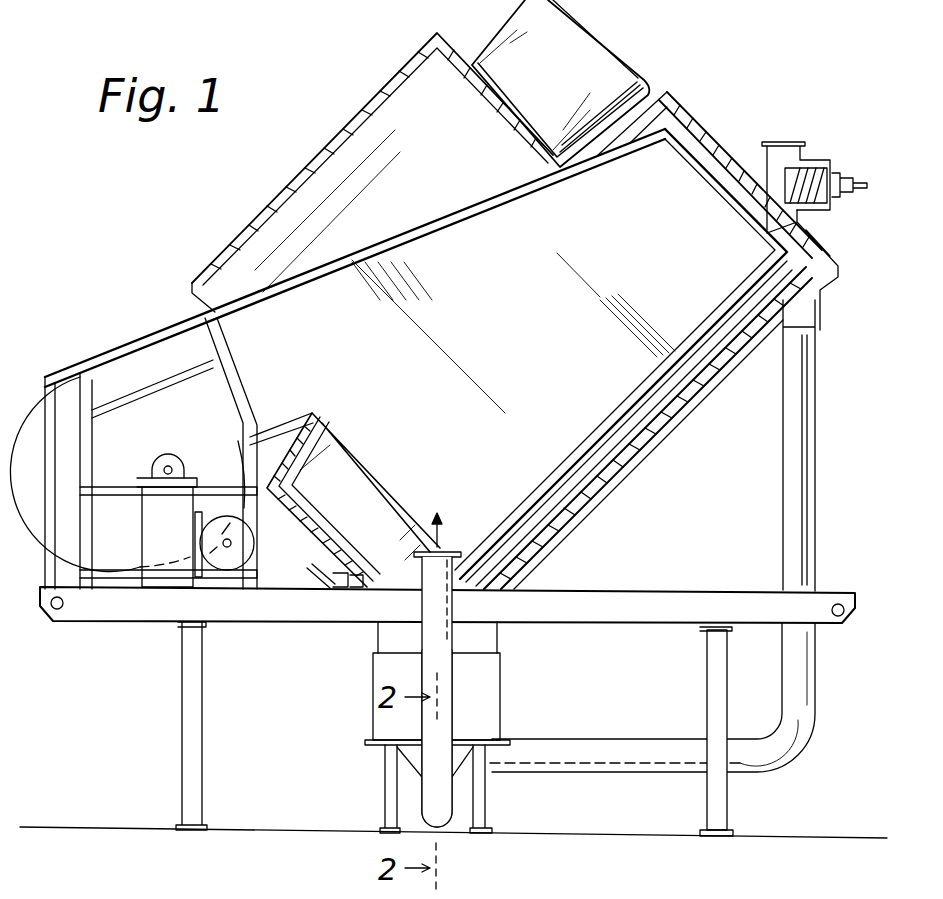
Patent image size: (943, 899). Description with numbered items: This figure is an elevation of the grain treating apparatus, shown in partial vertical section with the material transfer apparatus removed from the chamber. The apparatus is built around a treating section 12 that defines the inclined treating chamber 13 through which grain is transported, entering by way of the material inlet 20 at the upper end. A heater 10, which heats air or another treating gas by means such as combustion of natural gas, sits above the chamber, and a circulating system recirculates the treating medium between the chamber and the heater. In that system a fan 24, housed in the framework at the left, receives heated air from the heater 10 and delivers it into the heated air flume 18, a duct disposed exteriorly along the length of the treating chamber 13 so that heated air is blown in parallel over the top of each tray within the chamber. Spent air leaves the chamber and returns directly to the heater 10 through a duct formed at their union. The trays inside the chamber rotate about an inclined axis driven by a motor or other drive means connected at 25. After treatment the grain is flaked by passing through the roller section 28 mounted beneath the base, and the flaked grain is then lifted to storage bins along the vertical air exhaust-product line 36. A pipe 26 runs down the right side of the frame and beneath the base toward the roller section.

The heater 10 is at (621, 38).
The treating section 12 is at (832, 244).
The treating chamber 13 is at (366, 523).
The heated air flume 18 is at (486, 283).
The material inlet 20 is at (812, 150).
The fan 24 is at (135, 365).
The drive connection to tray axis 25 is at (305, 578).
The return pipe 26 is at (783, 490).
The roller section 28 is at (364, 676).
The air exhaust-product line 36 is at (425, 636).